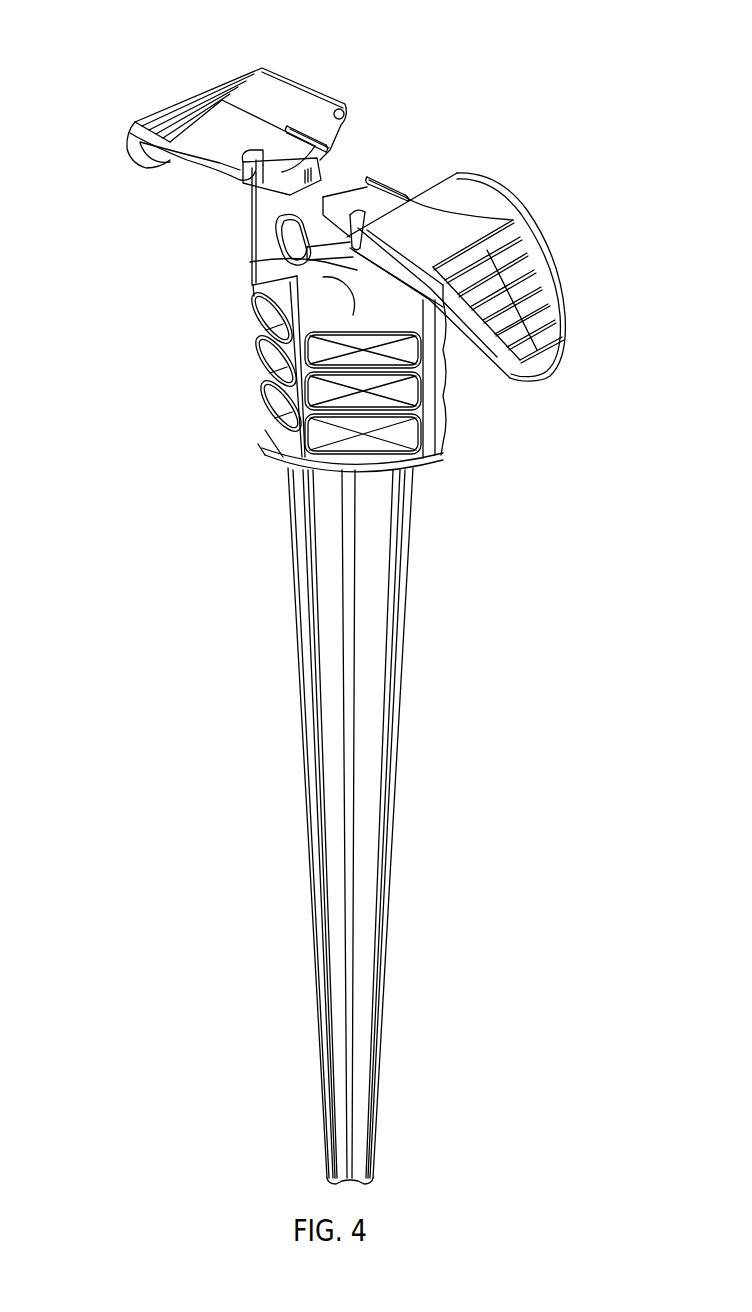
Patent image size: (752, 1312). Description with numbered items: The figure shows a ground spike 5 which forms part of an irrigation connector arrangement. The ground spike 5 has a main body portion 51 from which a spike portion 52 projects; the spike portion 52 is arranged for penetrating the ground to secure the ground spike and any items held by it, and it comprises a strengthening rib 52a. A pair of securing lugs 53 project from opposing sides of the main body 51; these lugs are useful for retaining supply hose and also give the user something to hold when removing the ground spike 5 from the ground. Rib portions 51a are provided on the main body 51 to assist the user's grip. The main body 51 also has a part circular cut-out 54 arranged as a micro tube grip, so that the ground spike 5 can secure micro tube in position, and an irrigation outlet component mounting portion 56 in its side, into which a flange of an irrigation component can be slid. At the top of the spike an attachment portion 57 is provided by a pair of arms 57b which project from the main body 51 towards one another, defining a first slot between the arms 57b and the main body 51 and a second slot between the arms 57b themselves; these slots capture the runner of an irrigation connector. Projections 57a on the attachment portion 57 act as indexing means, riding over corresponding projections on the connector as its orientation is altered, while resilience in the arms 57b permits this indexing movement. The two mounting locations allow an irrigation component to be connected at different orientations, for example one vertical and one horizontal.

The ground spike 5 is at (268, 604).
The main body portion 51 is at (420, 410).
The rib portions 51a is at (262, 368).
The spike portion 52 is at (372, 607).
The strengthening rib 52a is at (333, 762).
The securing lugs 53 is at (132, 132).
The part circular cut-out 54 is at (295, 246).
The irrigation outlet component mounting portion 56 is at (410, 158).
The attachment portion 57 is at (282, 200).
The projections 57a is at (307, 134).
The arms 57b is at (395, 170).